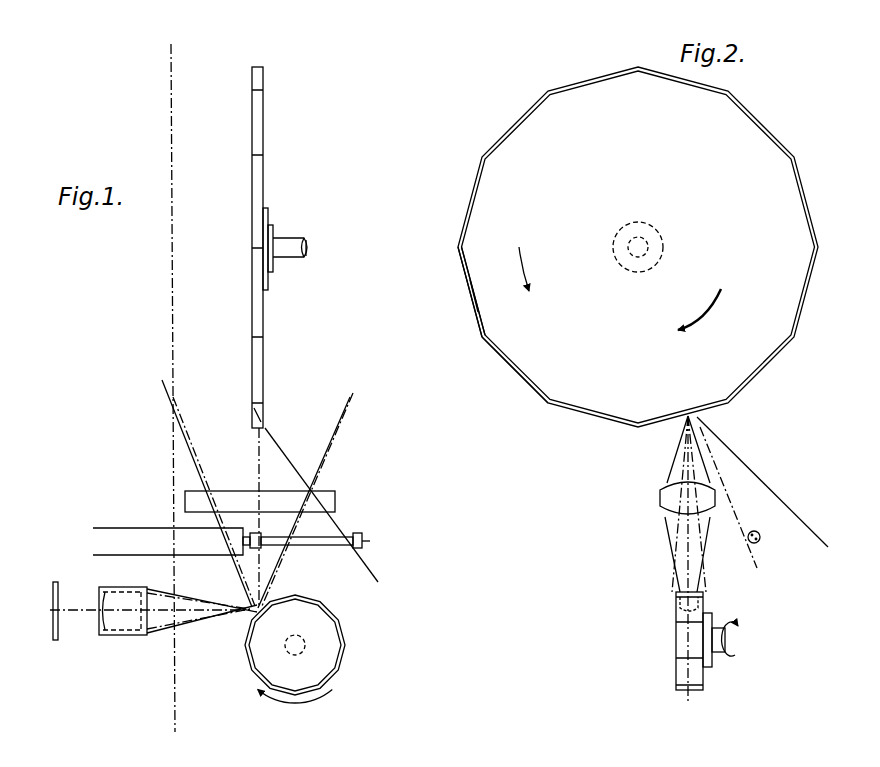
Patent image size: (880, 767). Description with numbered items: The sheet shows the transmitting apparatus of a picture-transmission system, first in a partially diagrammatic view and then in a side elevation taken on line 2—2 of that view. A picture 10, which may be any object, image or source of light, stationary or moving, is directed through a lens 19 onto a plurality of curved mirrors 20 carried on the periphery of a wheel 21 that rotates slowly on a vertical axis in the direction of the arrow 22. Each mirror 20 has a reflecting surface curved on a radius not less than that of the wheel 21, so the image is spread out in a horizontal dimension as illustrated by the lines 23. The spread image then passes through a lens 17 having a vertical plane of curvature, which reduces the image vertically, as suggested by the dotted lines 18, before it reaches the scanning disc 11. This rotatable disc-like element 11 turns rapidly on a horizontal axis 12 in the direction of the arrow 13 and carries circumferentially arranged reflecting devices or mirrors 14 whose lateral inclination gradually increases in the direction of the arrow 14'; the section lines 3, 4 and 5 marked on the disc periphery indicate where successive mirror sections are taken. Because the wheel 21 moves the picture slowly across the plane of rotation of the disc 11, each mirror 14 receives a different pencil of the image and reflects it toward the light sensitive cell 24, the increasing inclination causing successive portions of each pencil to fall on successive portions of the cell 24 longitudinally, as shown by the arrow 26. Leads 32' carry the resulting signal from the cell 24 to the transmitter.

In FIG. 1, the line 2— 2 is at (171, 44).
In FIG. 2, the transparent band 3 is at (490, 258).
In FIG. 2, the transparent band 4 is at (496, 285).
In FIG. 2, the transparent band 5 is at (505, 314).
In FIG. 1, the picture 10 is at (65, 594).
In FIG. 1, the rotatable disc-like element 11 is at (263, 175).
In FIG. 2, the rotatable disc-like element 11 is at (657, 173).
In FIG. 1, the horizontal axis 12 is at (293, 240).
In FIG. 1, the arrow 13 is at (312, 262).
In FIG. 2, the arrow 13 is at (699, 325).
In FIG. 2, the reflecting devices 14 is at (519, 368).
In FIG. 2, the arrow 14' is at (544, 265).
In FIG. 1, the lens 17 is at (335, 497).
In FIG. 2, the lens 17 is at (667, 498).
In FIG. 2, the dotted lines 18 is at (697, 458).
In FIG. 1, the lens 19 is at (132, 635).
In FIG. 1, the mirrors 20 is at (345, 643).
In FIG. 1, the wheel 21 is at (318, 667).
In FIG. 1, the arrow 22 is at (288, 707).
In FIG. 1, the lines 23 is at (187, 453).
In FIG. 1, the light sensitive cell 24 is at (356, 550).
In FIG. 2, the light sensitive cell 24 is at (762, 537).
In FIG. 1, the arrow 26 is at (318, 552).
In FIG. 1, the leads 32' is at (168, 553).